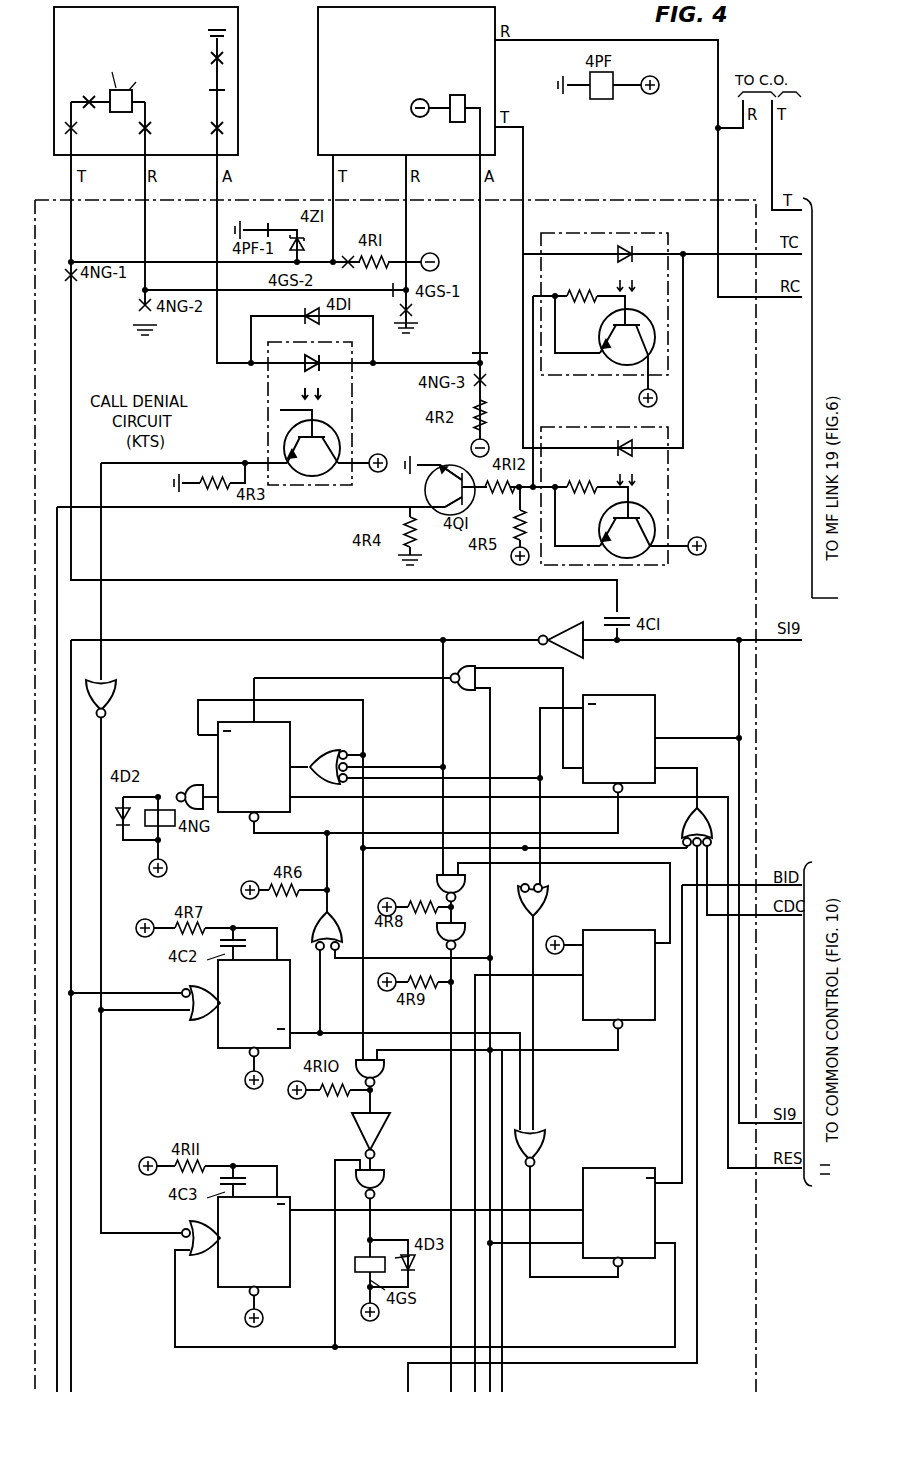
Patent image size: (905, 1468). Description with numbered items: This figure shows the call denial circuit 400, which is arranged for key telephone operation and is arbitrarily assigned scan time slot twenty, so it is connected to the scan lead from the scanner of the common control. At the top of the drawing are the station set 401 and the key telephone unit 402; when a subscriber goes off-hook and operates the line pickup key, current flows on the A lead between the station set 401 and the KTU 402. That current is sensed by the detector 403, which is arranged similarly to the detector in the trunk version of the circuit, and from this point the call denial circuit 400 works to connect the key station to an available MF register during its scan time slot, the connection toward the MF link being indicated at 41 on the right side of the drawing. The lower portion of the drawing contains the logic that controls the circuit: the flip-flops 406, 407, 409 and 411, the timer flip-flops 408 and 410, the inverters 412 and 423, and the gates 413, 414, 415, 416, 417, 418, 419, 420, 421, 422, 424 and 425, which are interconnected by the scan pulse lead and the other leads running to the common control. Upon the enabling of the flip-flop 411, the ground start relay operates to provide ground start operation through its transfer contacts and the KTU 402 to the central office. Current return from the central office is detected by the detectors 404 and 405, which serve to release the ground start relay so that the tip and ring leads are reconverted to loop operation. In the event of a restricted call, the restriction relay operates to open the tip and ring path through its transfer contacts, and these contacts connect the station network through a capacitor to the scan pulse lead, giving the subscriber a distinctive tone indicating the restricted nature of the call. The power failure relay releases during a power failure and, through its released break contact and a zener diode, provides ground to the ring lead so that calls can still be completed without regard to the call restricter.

The call denial circuit 400 is at (643, 202).
The station set 401 is at (238, 12).
The key telephone unit 402 is at (318, 93).
The detector 403 is at (352, 422).
The detector 404 is at (595, 240).
The detector 405 is at (572, 432).
The flip-flop 406 is at (257, 730).
The flip-flop 407 is at (622, 702).
The timer flip-flop (380) 408 is at (218, 1033).
The flip-flop 409 is at (612, 936).
The timer flip-flop (150) 410 is at (288, 1285).
The flip-flop 411 is at (615, 1168).
The inverter 412 is at (570, 622).
The NAND gate 413 is at (474, 668).
The NOR gate 414 is at (117, 688).
The OR gate 415 is at (327, 752).
The inverter gate 416 is at (194, 784).
The NOR gate 417 is at (685, 825).
The NOR gate 418 is at (549, 894).
The NAND gate 419 is at (432, 883).
The NOR gate 420 is at (310, 918).
The NAND gate 421 is at (437, 934).
The NAND gate 422 is at (386, 1066).
The inverter 423 is at (385, 1130).
The NAND gate 424 is at (386, 1178).
The NOR gate 425 is at (546, 1140).
The MF link connection 41 is at (826, 612).